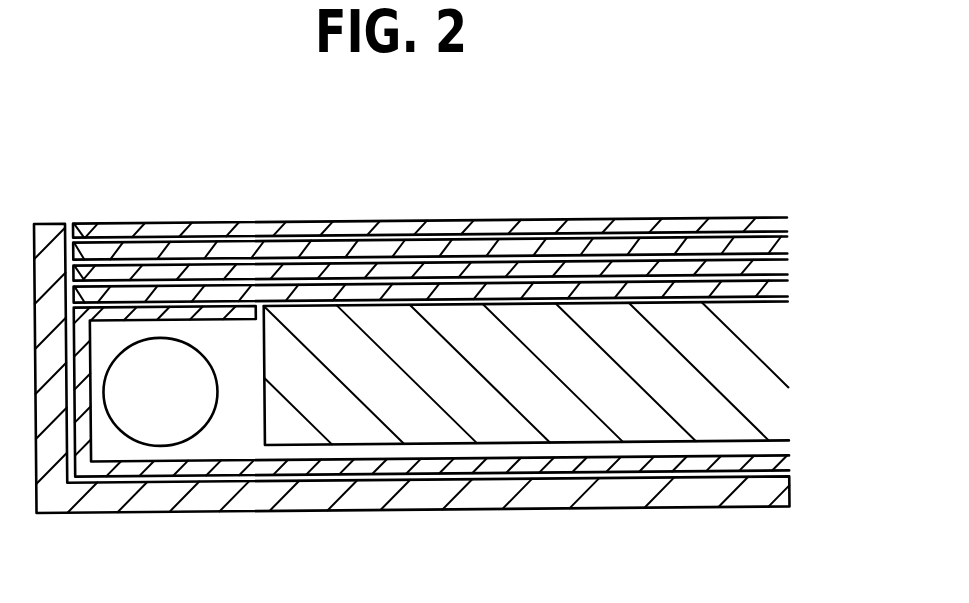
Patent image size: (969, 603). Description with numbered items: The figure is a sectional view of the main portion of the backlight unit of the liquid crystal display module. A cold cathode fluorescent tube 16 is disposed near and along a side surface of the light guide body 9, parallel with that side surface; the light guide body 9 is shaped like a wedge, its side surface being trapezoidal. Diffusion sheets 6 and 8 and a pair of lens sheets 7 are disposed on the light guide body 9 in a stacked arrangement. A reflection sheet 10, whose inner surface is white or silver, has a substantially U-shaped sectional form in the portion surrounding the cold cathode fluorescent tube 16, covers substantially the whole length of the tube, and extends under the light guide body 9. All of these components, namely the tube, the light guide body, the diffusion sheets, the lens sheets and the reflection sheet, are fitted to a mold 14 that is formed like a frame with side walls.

The diffusion sheet 6 is at (495, 226).
The lens sheets 7 is at (790, 238).
The diffusion sheet 8 is at (627, 290).
The light guide body 9 is at (441, 432).
The reflection sheet 10 is at (540, 465).
The mold 14 is at (708, 497).
The cold cathode fluorescent tube 16 is at (160, 437).